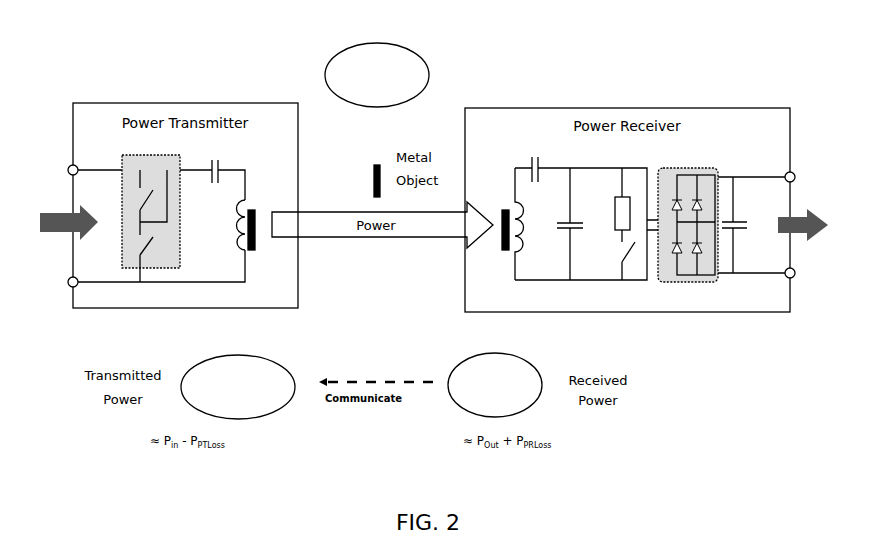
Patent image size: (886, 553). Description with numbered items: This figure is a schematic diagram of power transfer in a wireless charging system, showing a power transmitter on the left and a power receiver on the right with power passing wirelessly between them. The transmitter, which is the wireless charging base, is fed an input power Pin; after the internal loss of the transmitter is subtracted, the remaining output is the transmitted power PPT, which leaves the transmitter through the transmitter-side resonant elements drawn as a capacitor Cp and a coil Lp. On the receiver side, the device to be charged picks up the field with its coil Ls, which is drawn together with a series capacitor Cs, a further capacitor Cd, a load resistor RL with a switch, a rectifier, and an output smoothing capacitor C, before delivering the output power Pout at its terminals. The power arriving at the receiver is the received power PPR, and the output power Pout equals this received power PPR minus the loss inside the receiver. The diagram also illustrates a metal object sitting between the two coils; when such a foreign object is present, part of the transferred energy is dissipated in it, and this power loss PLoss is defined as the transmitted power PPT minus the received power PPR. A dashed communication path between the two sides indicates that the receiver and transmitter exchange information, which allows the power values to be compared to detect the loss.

The input power Pin is at (62, 214).
The primary capacitor Cp is at (223, 166).
The primary coil Lp is at (234, 225).
The power loss PLoss is at (377, 150).
The secondary coil Ls is at (519, 224).
The secondary series capacitor Cs is at (544, 165).
The detection capacitor Cd is at (560, 224).
The load resistor RL is at (612, 224).
The output capacitor C is at (736, 225).
The output power of the wireless charging receiver Pout is at (803, 213).
The transmitted power PPT is at (270, 249).
The received power PPR is at (484, 249).